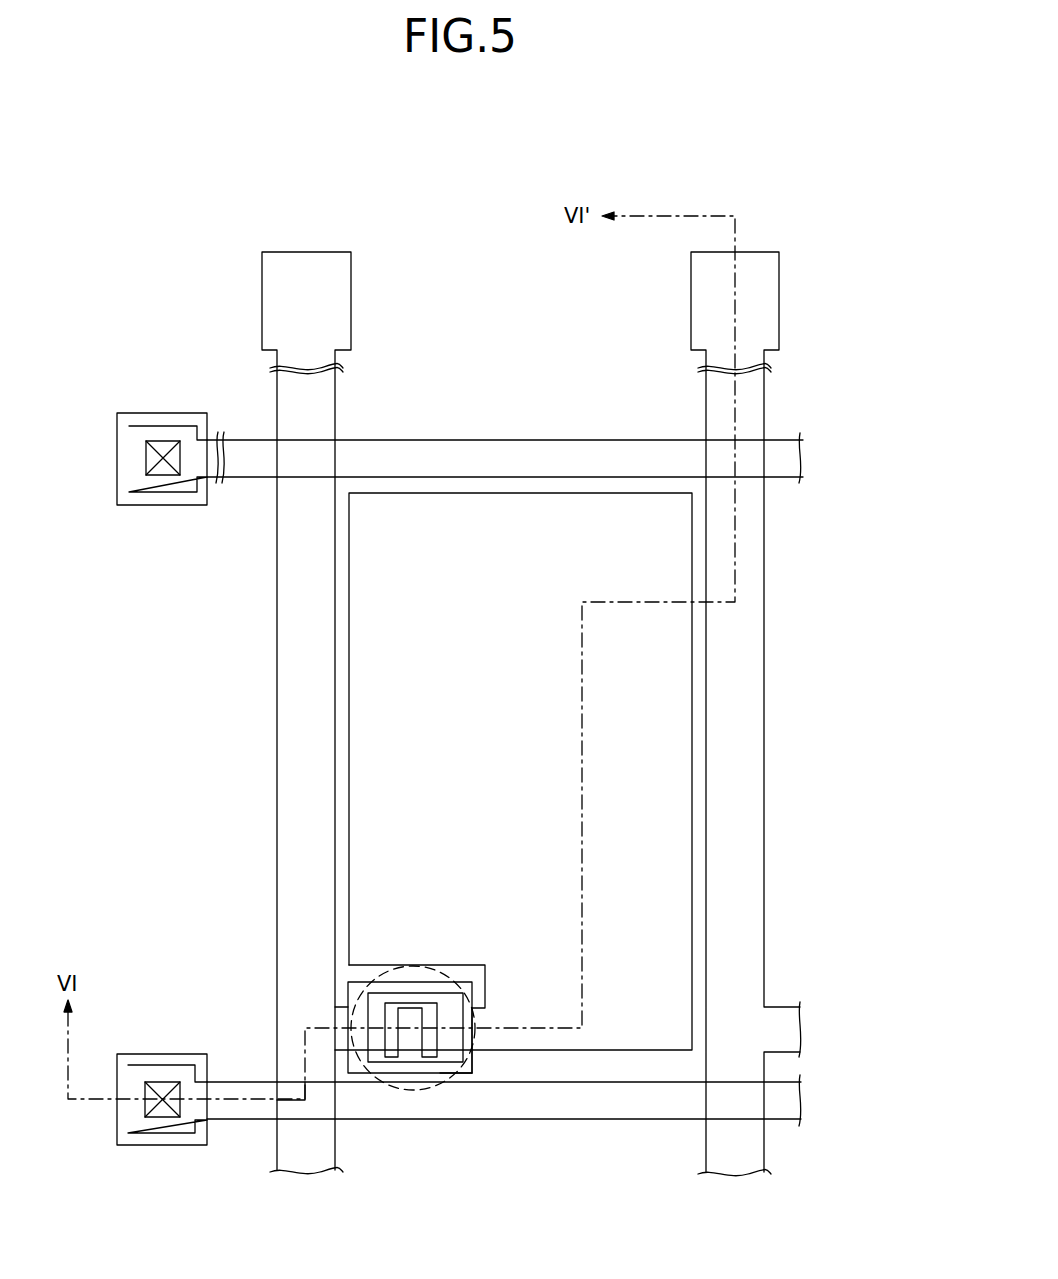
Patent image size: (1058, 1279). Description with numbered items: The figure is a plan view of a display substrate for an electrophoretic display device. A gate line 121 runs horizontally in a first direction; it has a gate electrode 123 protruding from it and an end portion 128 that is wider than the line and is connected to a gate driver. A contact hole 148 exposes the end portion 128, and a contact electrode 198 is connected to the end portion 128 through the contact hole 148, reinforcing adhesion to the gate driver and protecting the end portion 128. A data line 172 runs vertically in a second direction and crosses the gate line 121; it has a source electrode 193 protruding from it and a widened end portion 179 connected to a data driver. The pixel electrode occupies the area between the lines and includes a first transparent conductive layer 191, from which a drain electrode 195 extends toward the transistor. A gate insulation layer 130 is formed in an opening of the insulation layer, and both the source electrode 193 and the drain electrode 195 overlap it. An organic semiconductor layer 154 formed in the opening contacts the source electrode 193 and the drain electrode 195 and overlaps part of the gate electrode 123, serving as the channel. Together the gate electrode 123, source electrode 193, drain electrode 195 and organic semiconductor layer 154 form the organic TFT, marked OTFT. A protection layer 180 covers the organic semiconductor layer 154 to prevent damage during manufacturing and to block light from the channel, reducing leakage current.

The gate line 121 is at (635, 1198).
The gate electrode 123 is at (370, 1018).
The end portion 128 is at (187, 1128).
The gate insulation layer 130 is at (473, 1062).
The contact hole 148 is at (153, 1122).
The organic semiconductor layer 154 is at (397, 1078).
The data line 172 is at (313, 712).
The end portion 179 is at (765, 252).
The protection layer 180 is at (453, 1082).
The first transparent conductive layer 191 is at (348, 828).
The source electrode 193 is at (372, 1082).
The drain electrode 195 is at (427, 1073).
The contact electrode 198 is at (137, 1054).
The organic TFT OTFT is at (387, 970).